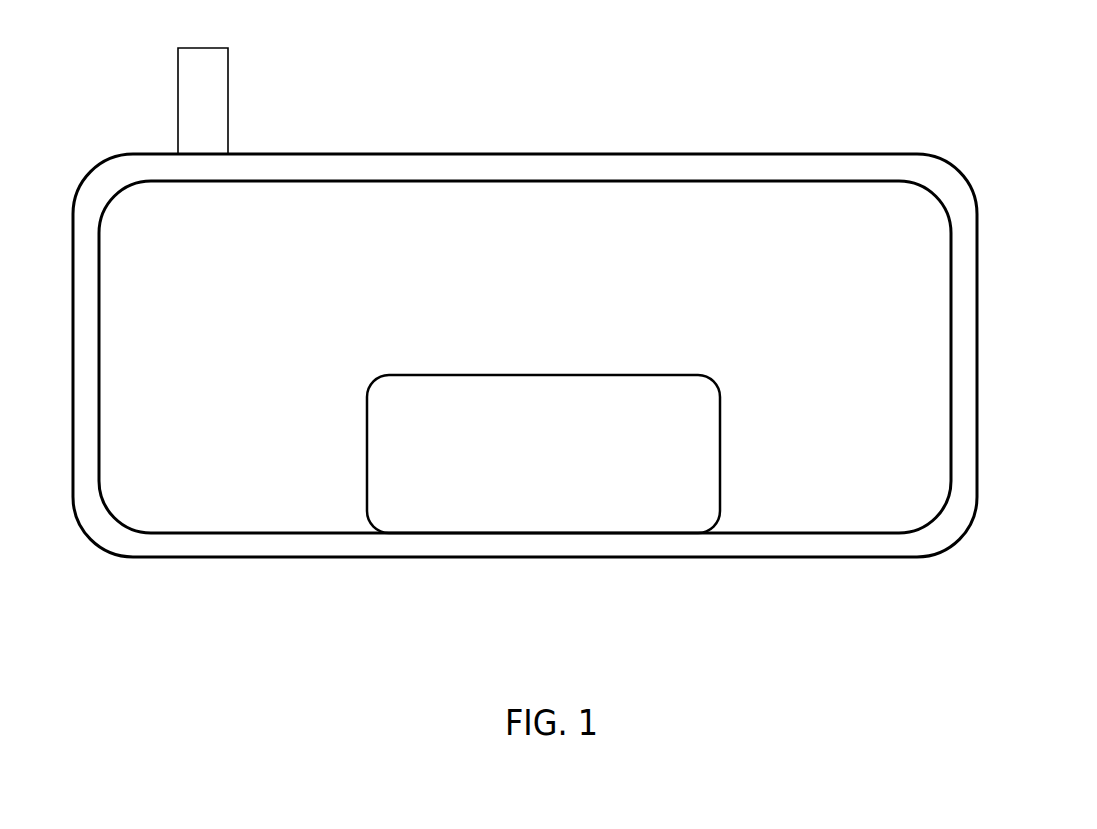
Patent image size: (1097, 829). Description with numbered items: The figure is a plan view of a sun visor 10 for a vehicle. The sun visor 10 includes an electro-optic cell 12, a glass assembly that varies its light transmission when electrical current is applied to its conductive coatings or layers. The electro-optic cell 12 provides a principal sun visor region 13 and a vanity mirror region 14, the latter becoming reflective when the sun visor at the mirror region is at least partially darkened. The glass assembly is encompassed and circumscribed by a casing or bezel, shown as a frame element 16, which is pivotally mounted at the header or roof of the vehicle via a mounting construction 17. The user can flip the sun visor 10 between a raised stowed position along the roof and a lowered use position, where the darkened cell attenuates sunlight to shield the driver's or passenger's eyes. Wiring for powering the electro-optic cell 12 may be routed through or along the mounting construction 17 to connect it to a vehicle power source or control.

The sun visor 10 is at (368, 118).
The electro-optic cell 12 is at (770, 220).
The sun visor region 13 is at (888, 363).
The vanity mirror region 14 is at (535, 518).
The frame element 16 is at (960, 202).
The mounting construction 17 is at (200, 92).